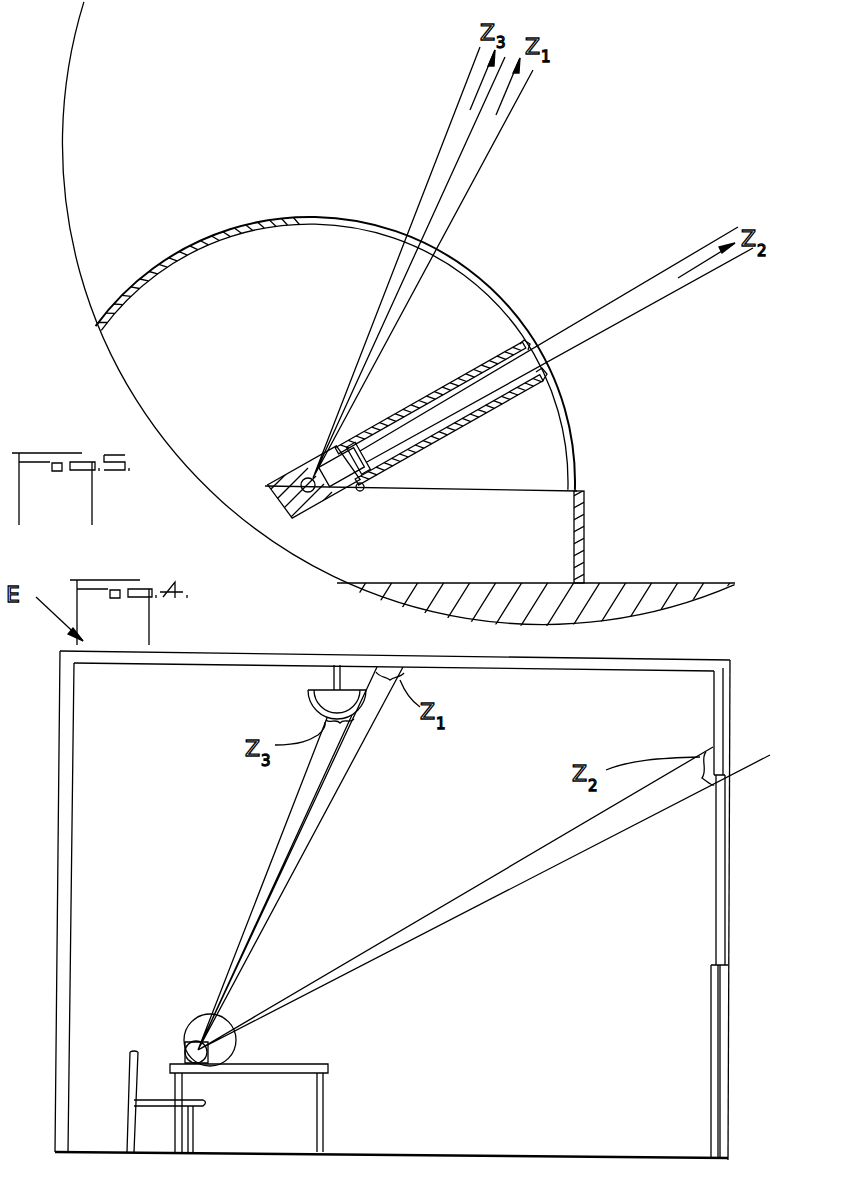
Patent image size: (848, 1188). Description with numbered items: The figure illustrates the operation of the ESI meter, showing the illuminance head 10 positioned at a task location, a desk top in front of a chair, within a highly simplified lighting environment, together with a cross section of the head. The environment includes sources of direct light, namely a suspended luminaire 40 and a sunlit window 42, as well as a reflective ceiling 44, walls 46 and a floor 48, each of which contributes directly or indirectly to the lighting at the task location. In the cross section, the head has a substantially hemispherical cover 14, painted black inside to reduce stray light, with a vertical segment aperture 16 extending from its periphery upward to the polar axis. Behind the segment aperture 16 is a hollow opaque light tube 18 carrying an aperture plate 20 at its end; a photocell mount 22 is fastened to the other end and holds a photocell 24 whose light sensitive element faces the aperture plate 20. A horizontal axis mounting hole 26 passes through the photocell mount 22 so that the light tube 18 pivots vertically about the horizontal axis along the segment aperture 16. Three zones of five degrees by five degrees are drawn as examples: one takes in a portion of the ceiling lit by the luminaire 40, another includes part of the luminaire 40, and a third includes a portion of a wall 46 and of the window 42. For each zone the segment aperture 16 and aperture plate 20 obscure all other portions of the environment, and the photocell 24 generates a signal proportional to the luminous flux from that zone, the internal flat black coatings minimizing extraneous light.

In FIG. 5, the illuminance head 10 is at (247, 180).
In FIG. 4, the illuminance head 10 is at (186, 1040).
In FIG. 5, the hemispherical cover 14 is at (290, 309).
In FIG. 5, the segment aperture 16 is at (572, 437).
In FIG. 5, the light tube 18 is at (525, 383).
In FIG. 5, the aperture plate 20 is at (553, 364).
In FIG. 5, the photocell mount 22 is at (300, 515).
In FIG. 5, the photocell 24 is at (368, 458).
In FIG. 5, the horizontal axis mounting hole 26 is at (304, 478).
In FIG. 4, the suspended luminaire 40 is at (312, 690).
In FIG. 4, the sunlit window 42 is at (716, 912).
In FIG. 4, the reflective ceiling 44 is at (599, 664).
In FIG. 4, the walls 46 is at (69, 862).
In FIG. 4, the floor 48 is at (430, 1151).